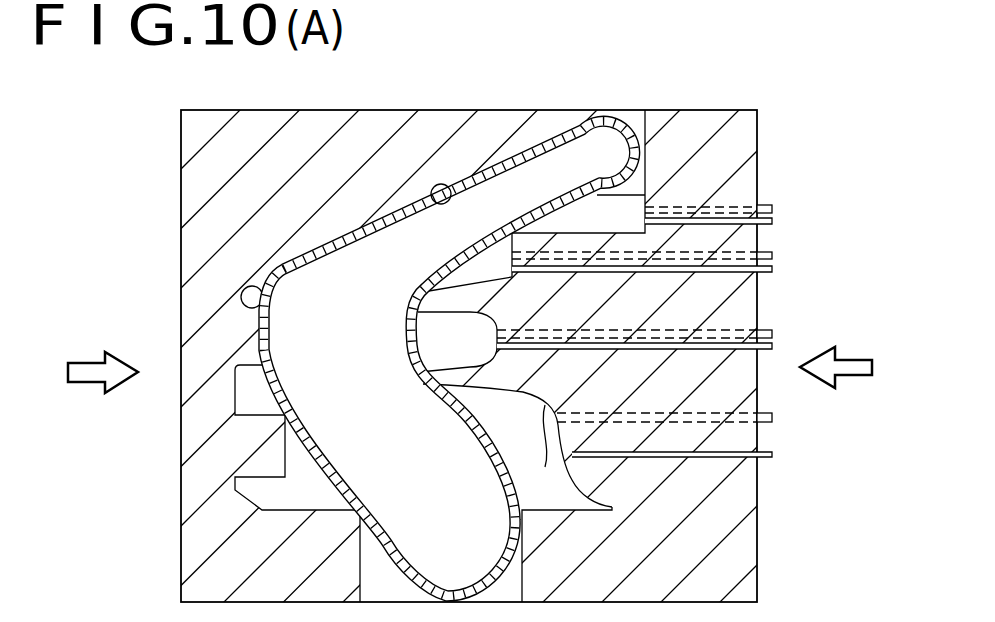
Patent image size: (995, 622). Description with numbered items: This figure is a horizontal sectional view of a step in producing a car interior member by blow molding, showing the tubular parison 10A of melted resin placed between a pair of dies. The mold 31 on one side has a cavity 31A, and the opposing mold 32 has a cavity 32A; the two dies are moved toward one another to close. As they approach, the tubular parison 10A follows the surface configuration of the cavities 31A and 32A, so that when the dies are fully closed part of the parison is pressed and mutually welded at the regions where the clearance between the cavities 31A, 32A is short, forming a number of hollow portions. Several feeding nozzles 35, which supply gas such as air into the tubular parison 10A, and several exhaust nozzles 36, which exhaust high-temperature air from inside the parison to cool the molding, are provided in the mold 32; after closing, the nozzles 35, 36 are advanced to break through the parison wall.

The mold 31 is at (190, 148).
The cavity 31A is at (438, 186).
The tubular parison 10A is at (599, 116).
The mold 32 is at (747, 142).
The cavity 32A is at (517, 445).
The feeding nozzle 35 is at (773, 222).
The exhaust nozzle 36 is at (762, 205).